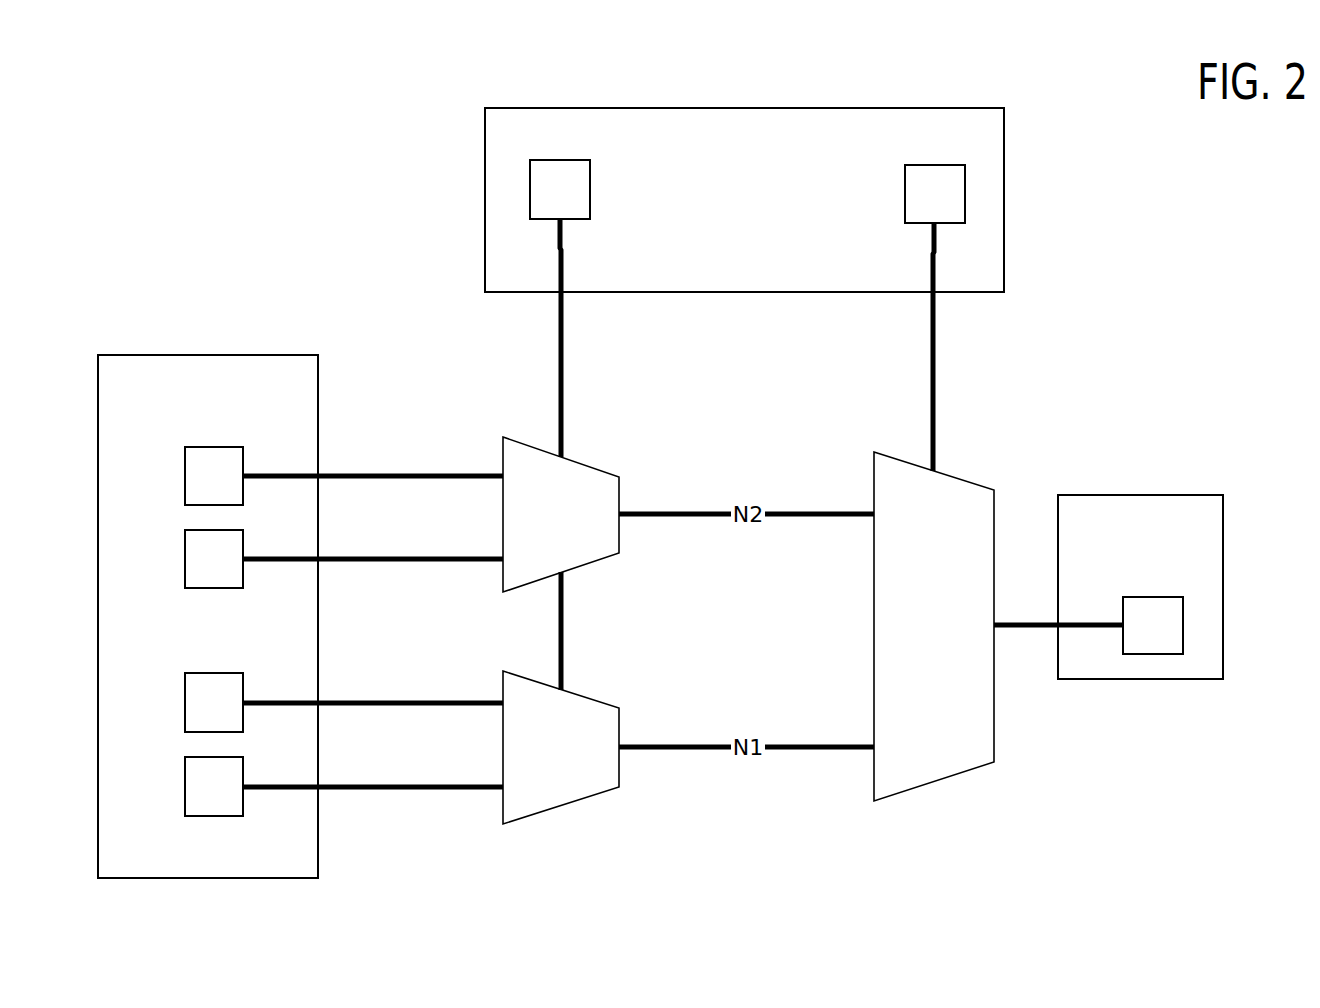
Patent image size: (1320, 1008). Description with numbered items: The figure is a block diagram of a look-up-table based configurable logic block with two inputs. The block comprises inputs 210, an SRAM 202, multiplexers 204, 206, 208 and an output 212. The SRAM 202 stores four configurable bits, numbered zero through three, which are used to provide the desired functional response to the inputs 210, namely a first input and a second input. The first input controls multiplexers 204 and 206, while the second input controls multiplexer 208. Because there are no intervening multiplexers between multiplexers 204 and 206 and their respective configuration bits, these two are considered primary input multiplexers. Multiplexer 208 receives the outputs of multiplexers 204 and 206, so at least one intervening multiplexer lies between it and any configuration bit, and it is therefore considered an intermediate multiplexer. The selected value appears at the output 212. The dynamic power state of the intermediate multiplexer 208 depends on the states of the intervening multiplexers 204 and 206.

The SRAM 202 is at (272, 353).
The multiplexer 204 is at (588, 456).
The multiplexer 206 is at (588, 690).
The multiplexer 208 is at (963, 476).
The inputs 210 is at (790, 108).
The output 212 is at (1200, 495).